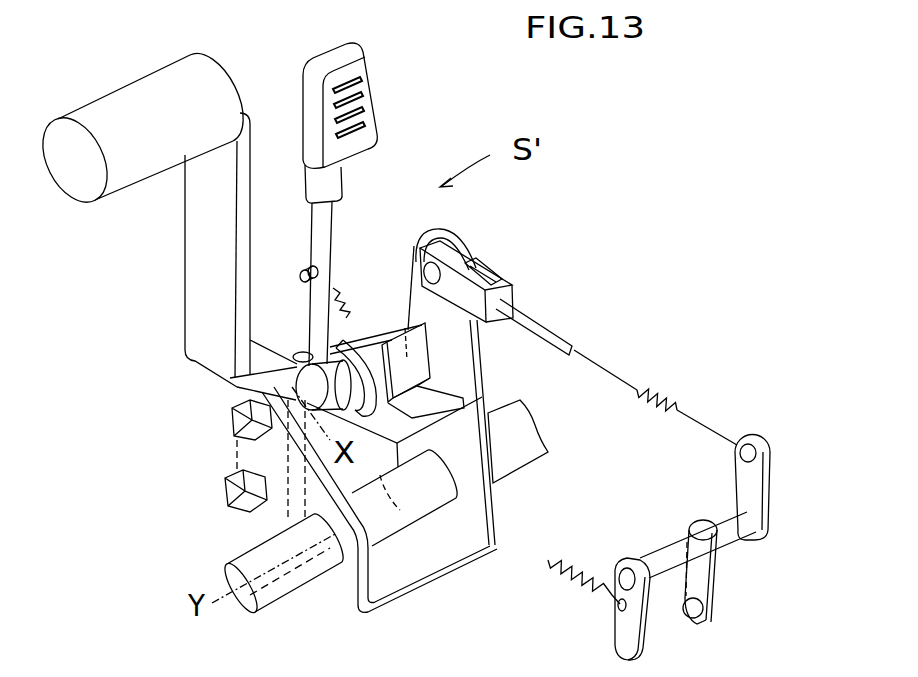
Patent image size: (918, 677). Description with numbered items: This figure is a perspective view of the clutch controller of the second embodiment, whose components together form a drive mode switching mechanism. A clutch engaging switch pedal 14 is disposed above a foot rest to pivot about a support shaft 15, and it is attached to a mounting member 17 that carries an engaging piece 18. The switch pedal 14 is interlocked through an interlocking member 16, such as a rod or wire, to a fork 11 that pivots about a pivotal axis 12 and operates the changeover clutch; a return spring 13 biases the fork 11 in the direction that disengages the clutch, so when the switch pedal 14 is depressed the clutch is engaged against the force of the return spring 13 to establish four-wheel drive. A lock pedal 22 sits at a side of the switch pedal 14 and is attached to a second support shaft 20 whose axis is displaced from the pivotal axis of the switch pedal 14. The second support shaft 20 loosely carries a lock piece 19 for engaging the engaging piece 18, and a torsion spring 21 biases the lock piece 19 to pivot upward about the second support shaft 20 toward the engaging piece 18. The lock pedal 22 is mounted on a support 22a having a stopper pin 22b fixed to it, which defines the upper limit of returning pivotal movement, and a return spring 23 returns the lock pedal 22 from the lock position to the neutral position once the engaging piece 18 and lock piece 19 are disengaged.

The fork 11 is at (718, 590).
The pivotal axis 12 is at (720, 520).
The return spring 13 is at (548, 565).
The switch pedal 14 is at (88, 193).
The support shaft 15 is at (282, 588).
The interlocking member 16 is at (543, 325).
The mounting member 17 is at (490, 522).
The engaging piece 18 is at (423, 352).
The lock piece 19 is at (438, 415).
The second support shaft 20 is at (393, 300).
The torsion spring 21 is at (303, 357).
The lock pedal 22 is at (368, 100).
The support 22a is at (317, 255).
The stopper pin 22b is at (360, 322).
The return spring 23 is at (340, 285).